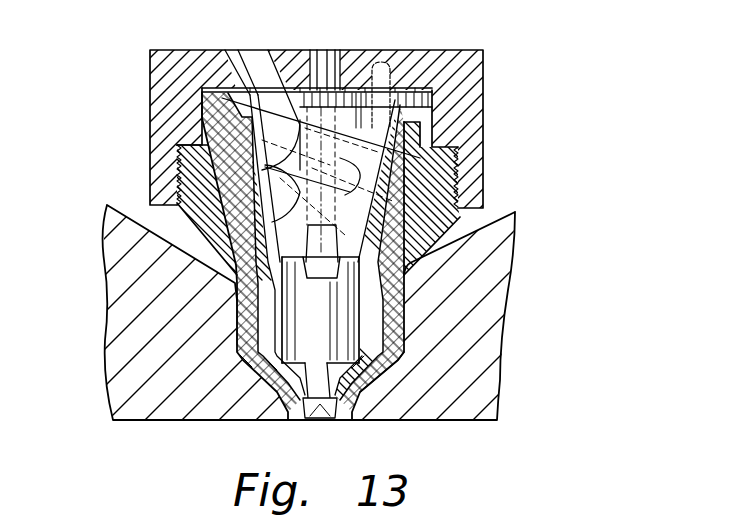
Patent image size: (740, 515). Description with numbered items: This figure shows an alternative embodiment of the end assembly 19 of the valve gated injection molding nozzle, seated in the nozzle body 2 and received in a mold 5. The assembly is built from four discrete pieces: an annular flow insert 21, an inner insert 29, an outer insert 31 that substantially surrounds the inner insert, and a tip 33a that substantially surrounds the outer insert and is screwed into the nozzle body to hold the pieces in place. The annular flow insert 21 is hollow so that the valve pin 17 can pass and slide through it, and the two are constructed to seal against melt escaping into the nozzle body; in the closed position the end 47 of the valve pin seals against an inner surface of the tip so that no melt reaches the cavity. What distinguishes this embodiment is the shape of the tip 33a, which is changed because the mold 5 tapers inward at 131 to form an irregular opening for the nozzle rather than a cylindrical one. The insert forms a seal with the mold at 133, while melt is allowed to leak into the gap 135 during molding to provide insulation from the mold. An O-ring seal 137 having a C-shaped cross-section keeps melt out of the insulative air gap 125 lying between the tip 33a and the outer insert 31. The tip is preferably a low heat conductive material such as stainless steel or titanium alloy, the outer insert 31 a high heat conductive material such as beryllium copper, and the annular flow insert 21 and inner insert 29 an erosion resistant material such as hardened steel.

The injection molding nozzle body 2 is at (485, 71).
The mold 5 is at (490, 298).
The valve pin 17 is at (357, 368).
The end assembly 19 is at (462, 224).
The annular flow insert 21 is at (355, 110).
The inner insert 29 is at (483, 130).
The outer insert 31 is at (483, 167).
The tip 33a is at (192, 224).
The end of the valve pin 47 is at (300, 400).
The insulative air gap 125 is at (258, 381).
The inward taper of the mold 131 is at (243, 342).
The seal between insert and mold 133 is at (320, 343).
The gap 135 is at (385, 377).
The O-ring seal 137 is at (268, 378).